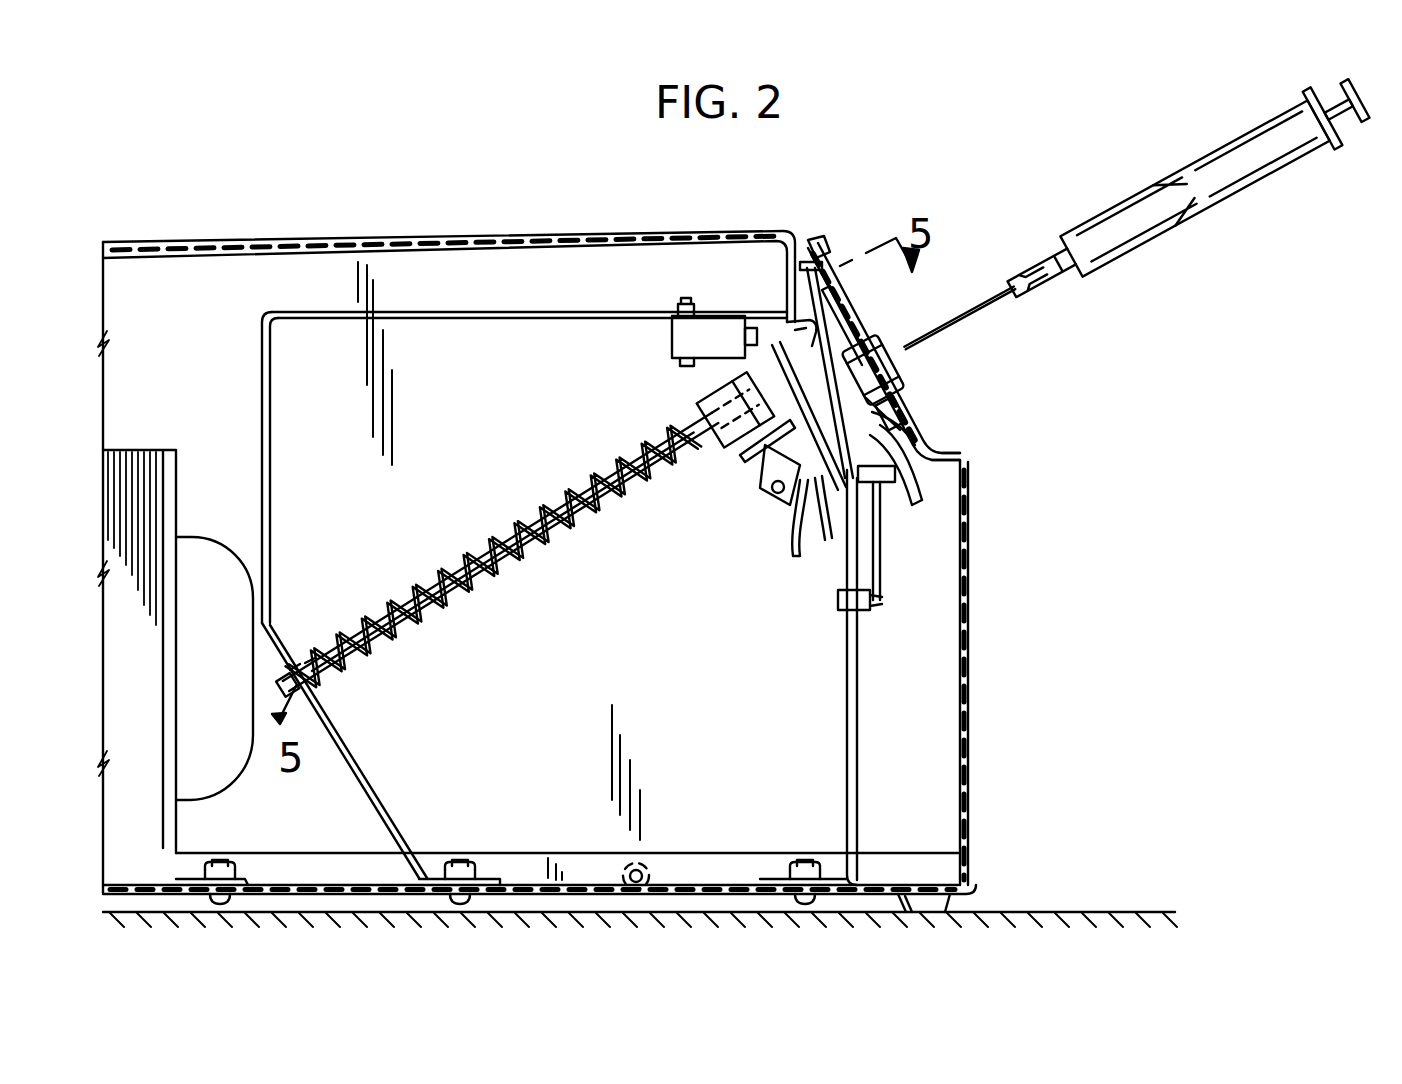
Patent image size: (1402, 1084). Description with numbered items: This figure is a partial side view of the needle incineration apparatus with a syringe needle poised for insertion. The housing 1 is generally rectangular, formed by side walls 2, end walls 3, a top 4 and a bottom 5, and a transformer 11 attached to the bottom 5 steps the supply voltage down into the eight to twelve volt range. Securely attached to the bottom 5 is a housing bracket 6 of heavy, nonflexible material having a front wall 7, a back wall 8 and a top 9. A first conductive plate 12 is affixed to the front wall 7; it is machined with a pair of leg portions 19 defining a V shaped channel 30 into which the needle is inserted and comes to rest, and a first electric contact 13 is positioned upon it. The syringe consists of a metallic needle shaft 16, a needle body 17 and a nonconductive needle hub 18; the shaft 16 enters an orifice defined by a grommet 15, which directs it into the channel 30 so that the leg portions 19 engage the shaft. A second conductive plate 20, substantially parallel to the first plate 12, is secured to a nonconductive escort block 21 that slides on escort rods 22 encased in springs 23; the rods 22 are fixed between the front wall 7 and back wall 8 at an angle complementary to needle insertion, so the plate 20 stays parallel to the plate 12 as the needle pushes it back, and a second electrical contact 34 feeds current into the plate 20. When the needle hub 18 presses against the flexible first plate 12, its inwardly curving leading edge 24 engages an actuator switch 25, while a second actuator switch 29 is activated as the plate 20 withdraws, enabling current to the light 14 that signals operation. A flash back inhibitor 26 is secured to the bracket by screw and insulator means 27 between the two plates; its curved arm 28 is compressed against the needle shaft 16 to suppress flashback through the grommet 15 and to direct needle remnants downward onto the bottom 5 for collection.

The housing 1 is at (367, 246).
The side walls 2 is at (168, 300).
The end walls 3 is at (920, 436).
The top 4 is at (240, 245).
The bottom 5 is at (515, 880).
The housing bracket 6 is at (492, 313).
The front wall 7 is at (858, 712).
The back wall 8 is at (262, 390).
The top 9 is at (553, 312).
The transformer 11 is at (125, 664).
The first conductive plate 12 is at (884, 402).
The first electric contact 13 is at (897, 416).
The light 14 is at (828, 238).
The grommet 15 is at (884, 386).
The needle shaft 16 is at (1010, 318).
The needle body 17 is at (1190, 207).
The needle hub 18 is at (1020, 278).
The leg portions 19 is at (838, 326).
The second conductive plate 20 is at (793, 515).
The escort block 21 is at (702, 392).
The escort rods 22 is at (625, 500).
The springs 23 is at (518, 570).
The inwardly curving leading edge 24 is at (805, 262).
The actuator switch 25 is at (707, 330).
The flash back inhibitor 26 is at (766, 462).
The screw and insulator means 27 is at (770, 318).
The curved arm 28 is at (816, 234).
The second actuator switch 29 is at (742, 462).
The V shaped channel 30 is at (890, 358).
The second electrical contact 34 is at (840, 575).